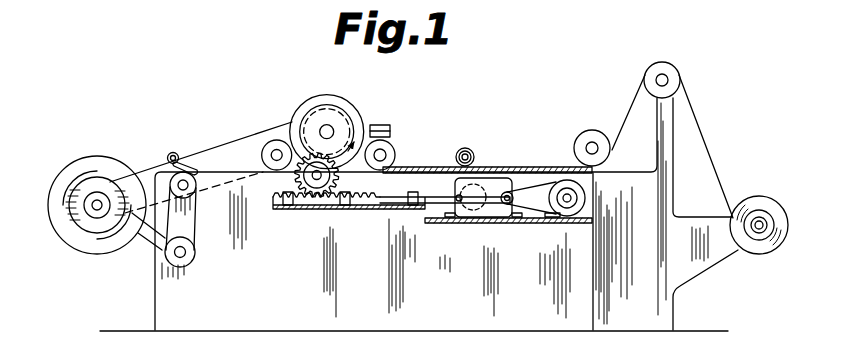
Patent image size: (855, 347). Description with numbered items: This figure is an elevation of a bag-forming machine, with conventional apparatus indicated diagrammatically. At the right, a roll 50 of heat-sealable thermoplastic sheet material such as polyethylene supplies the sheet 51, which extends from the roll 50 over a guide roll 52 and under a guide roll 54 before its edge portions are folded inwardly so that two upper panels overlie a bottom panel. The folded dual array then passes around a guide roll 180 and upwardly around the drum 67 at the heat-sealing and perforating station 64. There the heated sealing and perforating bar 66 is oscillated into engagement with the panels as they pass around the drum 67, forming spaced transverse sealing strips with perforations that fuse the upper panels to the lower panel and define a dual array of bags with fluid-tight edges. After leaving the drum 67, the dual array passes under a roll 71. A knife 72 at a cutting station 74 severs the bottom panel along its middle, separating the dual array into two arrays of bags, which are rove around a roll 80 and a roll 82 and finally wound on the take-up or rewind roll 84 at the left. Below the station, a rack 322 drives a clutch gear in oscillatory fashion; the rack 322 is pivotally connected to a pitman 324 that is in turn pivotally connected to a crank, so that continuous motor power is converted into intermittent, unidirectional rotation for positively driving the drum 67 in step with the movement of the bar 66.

The roll 50 is at (775, 172).
The sheet 51 is at (703, 137).
The guide roll 52 is at (699, 33).
The guide roll 54 is at (592, 130).
The heat-sealing and perforating station 64 is at (370, 96).
The sealing and perforating bar 66 is at (392, 127).
The drum 67 is at (311, 92).
The roll 71 is at (271, 140).
The knife 72 is at (198, 167).
The cutting station 74 is at (180, 148).
The roll 80 is at (197, 198).
The roll 82 is at (193, 260).
The take-up or rewind roll 84 is at (88, 233).
The guide roll 180 is at (395, 152).
The rack 322 is at (377, 212).
The pitman 324 is at (470, 203).